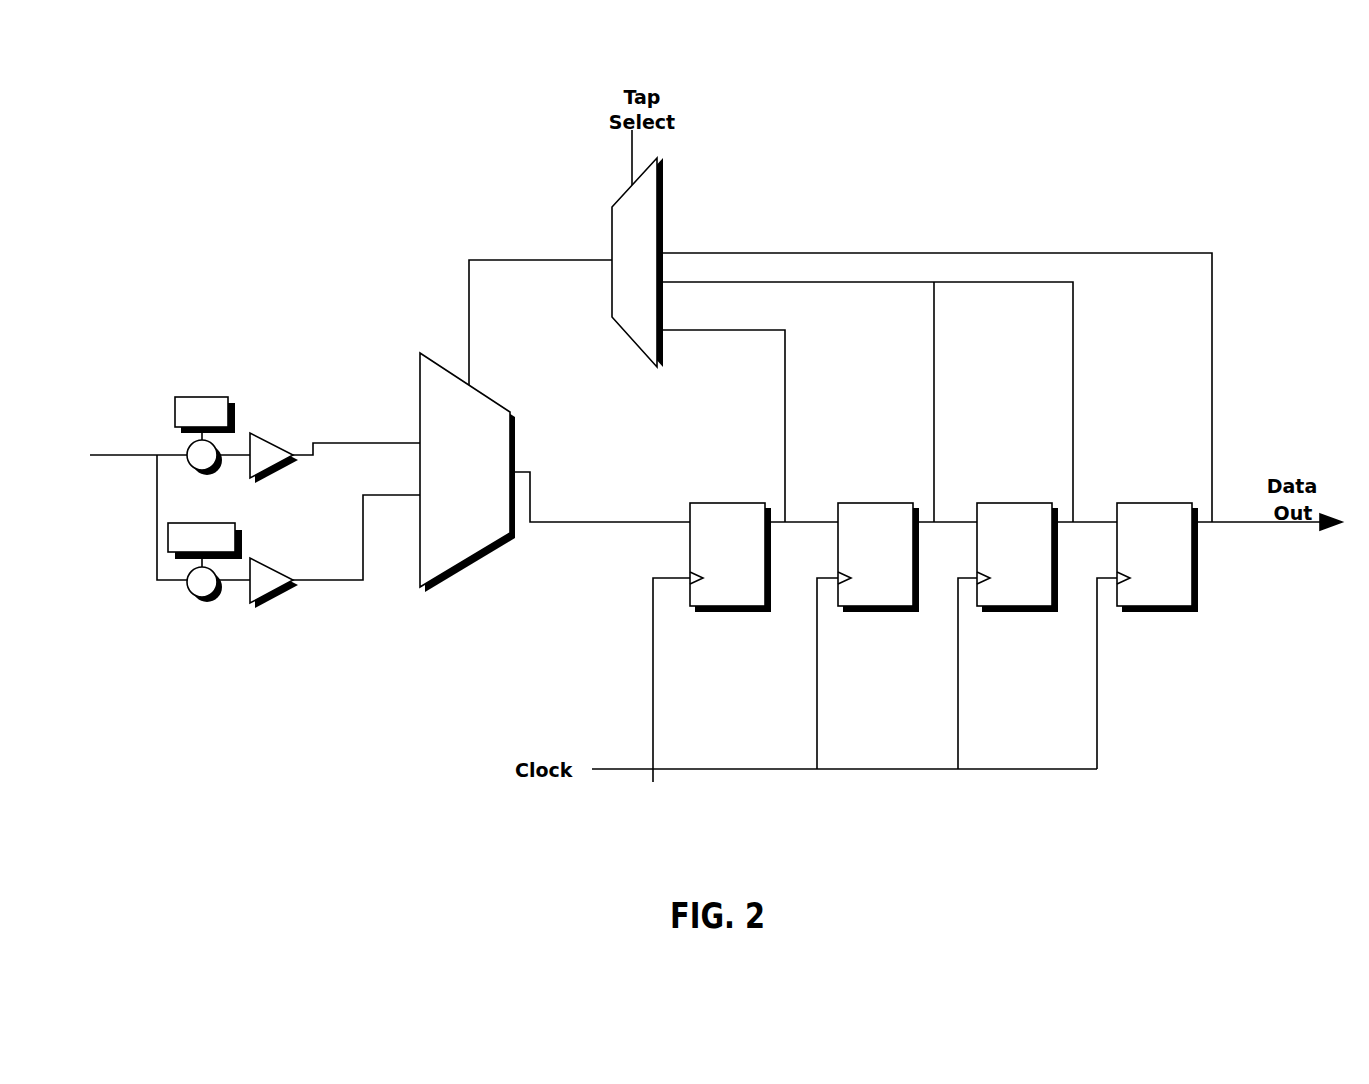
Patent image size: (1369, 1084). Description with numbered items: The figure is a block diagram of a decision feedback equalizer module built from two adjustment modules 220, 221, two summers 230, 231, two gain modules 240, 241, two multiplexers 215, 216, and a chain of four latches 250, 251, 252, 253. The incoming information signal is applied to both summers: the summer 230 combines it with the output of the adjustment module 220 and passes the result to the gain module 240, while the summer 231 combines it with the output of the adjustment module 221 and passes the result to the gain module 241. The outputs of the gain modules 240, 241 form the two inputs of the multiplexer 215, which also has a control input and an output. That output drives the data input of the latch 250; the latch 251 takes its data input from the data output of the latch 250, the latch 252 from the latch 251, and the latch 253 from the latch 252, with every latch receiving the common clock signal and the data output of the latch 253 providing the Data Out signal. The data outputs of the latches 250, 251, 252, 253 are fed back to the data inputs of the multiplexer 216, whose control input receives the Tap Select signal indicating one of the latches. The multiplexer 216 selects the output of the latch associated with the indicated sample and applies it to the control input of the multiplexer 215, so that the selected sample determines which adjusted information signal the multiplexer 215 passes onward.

The multiplexer 215 is at (497, 502).
The multiplexer 216 is at (688, 249).
The adjustment module 220 is at (162, 399).
The adjustment module 221 is at (170, 526).
The summer 230 is at (150, 441).
The summer 231 is at (144, 601).
The gain module 240 is at (309, 444).
The gain module 241 is at (300, 572).
The latch 250 is at (723, 596).
The latch 251 is at (872, 596).
The latch 252 is at (1010, 598).
The latch 253 is at (1150, 595).